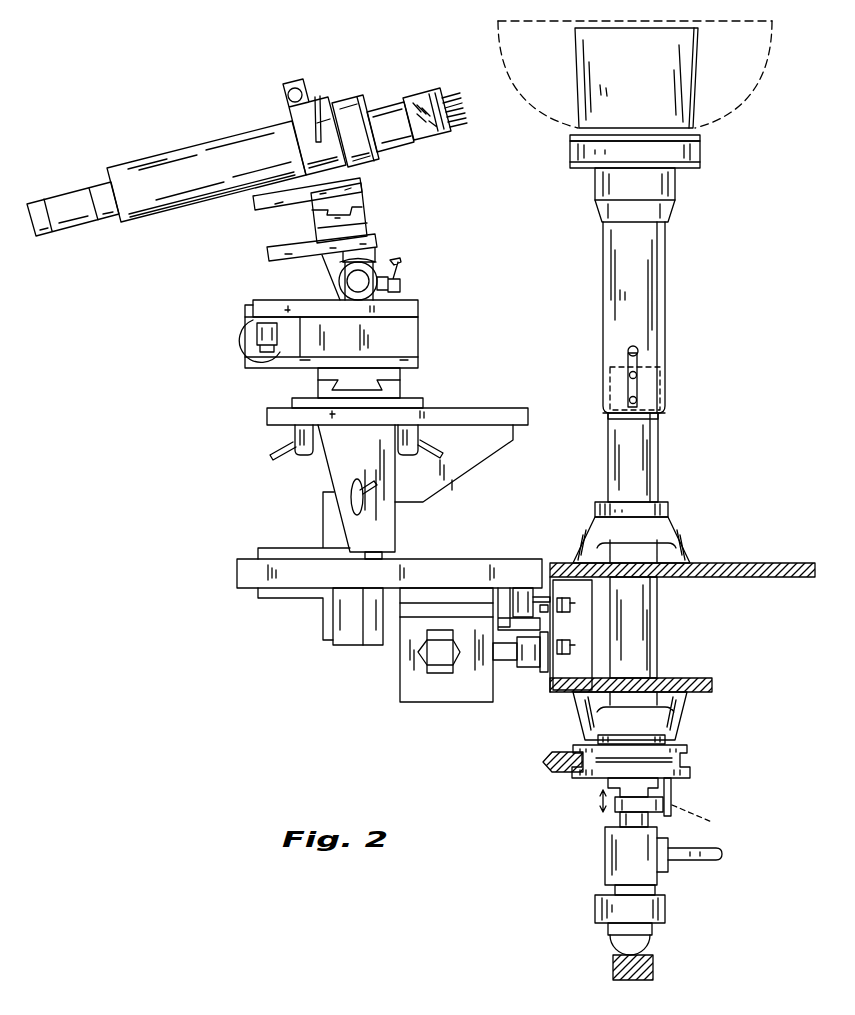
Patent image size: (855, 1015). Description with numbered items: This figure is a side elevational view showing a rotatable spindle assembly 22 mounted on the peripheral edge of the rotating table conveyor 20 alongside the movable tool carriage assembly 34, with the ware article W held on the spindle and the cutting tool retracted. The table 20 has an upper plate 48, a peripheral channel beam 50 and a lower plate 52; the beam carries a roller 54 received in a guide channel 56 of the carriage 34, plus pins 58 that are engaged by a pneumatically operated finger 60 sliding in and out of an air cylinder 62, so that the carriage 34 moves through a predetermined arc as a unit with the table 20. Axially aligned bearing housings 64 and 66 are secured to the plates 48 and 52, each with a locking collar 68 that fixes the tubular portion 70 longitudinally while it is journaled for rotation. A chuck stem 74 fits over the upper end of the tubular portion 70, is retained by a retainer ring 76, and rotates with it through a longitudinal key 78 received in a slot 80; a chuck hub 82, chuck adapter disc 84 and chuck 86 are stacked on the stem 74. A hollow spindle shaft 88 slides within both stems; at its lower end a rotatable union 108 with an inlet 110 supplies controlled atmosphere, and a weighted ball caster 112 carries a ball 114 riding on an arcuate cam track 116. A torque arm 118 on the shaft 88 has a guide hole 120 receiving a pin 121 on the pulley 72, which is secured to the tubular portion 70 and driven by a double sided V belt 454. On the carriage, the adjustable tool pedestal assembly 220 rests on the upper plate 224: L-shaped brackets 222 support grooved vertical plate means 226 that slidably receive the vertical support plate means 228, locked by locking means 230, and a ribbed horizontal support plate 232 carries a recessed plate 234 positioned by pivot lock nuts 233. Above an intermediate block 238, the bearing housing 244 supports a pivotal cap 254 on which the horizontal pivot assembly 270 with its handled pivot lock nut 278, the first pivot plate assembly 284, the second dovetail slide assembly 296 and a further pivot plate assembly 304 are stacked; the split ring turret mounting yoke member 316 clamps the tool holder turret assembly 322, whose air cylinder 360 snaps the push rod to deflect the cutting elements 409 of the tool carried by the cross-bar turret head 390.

The workpiece W is at (698, 84).
The rotating table conveyor 20 is at (800, 562).
The rotatable spindle assembly 22 is at (606, 460).
The movable tool carriage assembly 34 is at (252, 548).
The upper plate 48 is at (778, 576).
The peripheral channel beam 50 is at (562, 625).
The lower plate 52 is at (714, 686).
The roller 54 is at (523, 588).
The guide channel 56 is at (500, 588).
The pins 58 is at (530, 668).
The pneumatically operated latch or finger 60 is at (505, 660).
The air cylinder 62 is at (450, 702).
The pillow block or bearing housing 64 is at (688, 552).
The pillow block or bearing housing 66 is at (688, 712).
The clamp or locking collar 68 is at (668, 508).
The stem or tubular portion 70 is at (612, 367).
The pulley 72 is at (690, 772).
The chuck stem 74 is at (666, 267).
The clamp or retainer ring 76 is at (664, 416).
The longitudinal key 78 is at (637, 385).
The longitudinal slot 80 is at (640, 352).
The chuck hub 82 is at (677, 190).
The chuck adapter disc 84 is at (700, 153).
The chuck 86 is at (700, 139).
The hollow spindle shaft 88 is at (650, 822).
The rotatable union 108 is at (605, 857).
The inlet 110 is at (700, 861).
The weighted ball caster 112 is at (667, 909).
The ball 114 is at (652, 942).
The cam track 116 is at (655, 968).
The torque arm 118 is at (614, 808).
The guide hole 120 is at (712, 822).
The pin 121 is at (672, 790).
The adjustable tool pedestal assembly 220 is at (291, 405).
The L-shaped brackets 222 is at (323, 521).
The upper plate 224 is at (237, 571).
The grooved vertical plate means 226 is at (384, 556).
The vertical-oriented support plate means 228 is at (334, 471).
The locking means 230 is at (366, 500).
The ribbed horizontal support plate 232 is at (529, 416).
The pivot lock nuts 233 is at (290, 437).
The recessed plate 234 is at (425, 404).
The dovetail slide 238 is at (403, 384).
The bearing housing 244 is at (418, 344).
The pivotal cap 254 is at (420, 306).
The horizontal pivot assembly 270 is at (341, 286).
The handled pivot lock nut 278 is at (402, 284).
The first pivot plate assembly 284 is at (378, 229).
The second dovetail slide assembly 296 is at (368, 204).
The upper slide bar 304 is at (360, 180).
The split ring turret mounting yoke member 316 is at (327, 97).
The tool holder turret assembly 322 is at (190, 160).
The air cylinder 360 is at (74, 188).
The cross-bar turret head 390 is at (415, 96).
The cutting elements 409 is at (462, 122).
The double sided V belt 454 is at (545, 762).